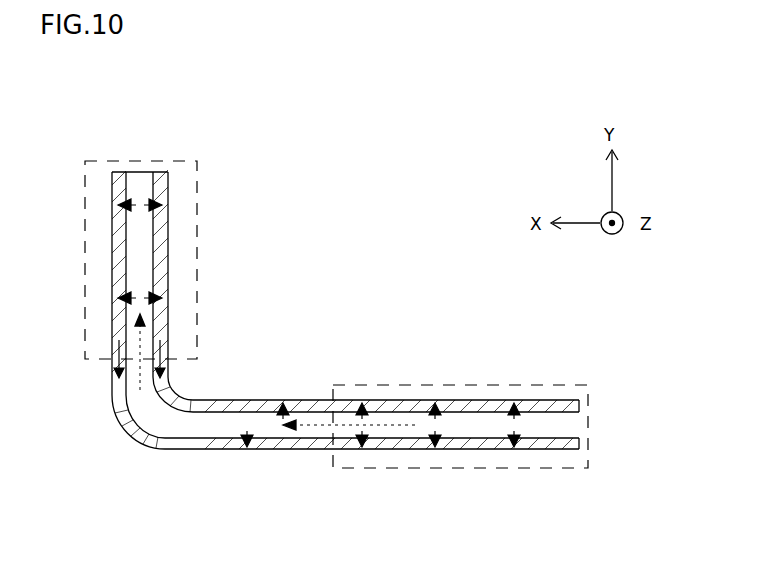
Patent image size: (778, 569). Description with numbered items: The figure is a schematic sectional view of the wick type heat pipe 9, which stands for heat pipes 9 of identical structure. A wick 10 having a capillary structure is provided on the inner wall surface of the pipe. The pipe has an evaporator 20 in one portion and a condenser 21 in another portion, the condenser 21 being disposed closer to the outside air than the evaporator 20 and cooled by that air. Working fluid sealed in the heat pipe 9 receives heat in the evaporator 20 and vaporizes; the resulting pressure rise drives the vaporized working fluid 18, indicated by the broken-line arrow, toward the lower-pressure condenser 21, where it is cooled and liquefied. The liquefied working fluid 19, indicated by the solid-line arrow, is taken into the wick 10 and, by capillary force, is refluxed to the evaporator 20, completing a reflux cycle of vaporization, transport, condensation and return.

The heat pipe 9 is at (516, 116).
The wick 10 is at (168, 267).
The vaporized working fluid 18 is at (393, 404).
The liquefied working fluid 19 is at (236, 400).
The evaporator 20 is at (398, 469).
The condenser 21 is at (163, 160).